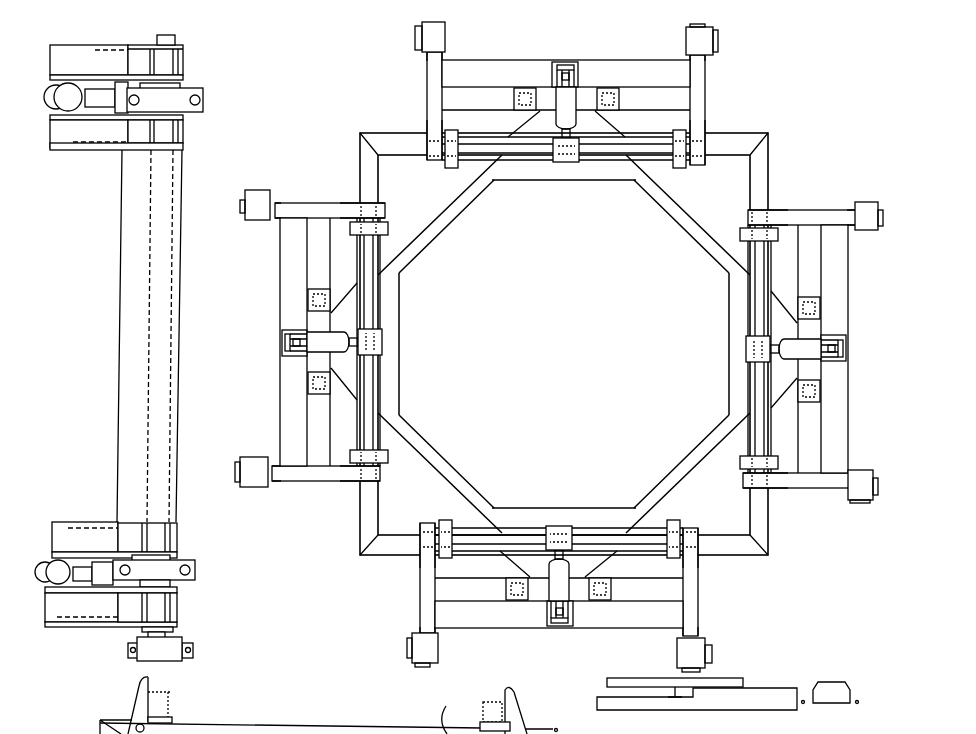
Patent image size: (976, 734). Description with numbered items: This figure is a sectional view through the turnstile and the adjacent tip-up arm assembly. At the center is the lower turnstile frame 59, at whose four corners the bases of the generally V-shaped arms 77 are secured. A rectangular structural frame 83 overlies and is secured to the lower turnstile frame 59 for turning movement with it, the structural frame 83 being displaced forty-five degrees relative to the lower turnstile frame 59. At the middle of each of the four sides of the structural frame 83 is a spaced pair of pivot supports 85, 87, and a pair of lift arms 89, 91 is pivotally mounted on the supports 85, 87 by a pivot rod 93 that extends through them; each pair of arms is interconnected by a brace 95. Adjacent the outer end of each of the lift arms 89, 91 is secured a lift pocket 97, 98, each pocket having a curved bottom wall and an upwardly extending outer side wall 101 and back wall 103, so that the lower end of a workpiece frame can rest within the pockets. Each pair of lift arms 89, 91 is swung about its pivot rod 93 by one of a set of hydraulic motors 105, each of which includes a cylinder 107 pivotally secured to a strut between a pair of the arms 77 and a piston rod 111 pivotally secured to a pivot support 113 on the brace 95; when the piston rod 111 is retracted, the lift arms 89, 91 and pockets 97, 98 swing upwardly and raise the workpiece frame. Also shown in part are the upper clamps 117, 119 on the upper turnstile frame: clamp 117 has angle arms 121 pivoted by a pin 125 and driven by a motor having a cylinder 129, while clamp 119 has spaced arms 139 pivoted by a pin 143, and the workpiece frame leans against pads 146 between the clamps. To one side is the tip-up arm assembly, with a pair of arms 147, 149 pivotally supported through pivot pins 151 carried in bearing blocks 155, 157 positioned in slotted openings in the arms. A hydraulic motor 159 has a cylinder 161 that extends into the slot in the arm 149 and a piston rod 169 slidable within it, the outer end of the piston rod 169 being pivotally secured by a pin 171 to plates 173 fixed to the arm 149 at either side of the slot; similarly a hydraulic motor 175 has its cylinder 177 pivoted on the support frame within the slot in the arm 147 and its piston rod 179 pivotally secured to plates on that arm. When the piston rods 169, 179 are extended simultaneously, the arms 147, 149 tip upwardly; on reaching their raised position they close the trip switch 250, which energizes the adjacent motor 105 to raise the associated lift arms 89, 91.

The lower turnstile frame 59 is at (445, 207).
The V-shaped arms 77 is at (622, 88).
The structural frame 83 is at (420, 131).
The pivot support 85 is at (685, 133).
The pivot support 87 is at (468, 137).
The lift arm 89 is at (705, 100).
The lift arm 91 is at (442, 95).
The pivot rod 93 is at (543, 160).
The brace 95 is at (503, 60).
The lift pocket 97 is at (708, 26).
The lift pocket 98 is at (440, 38).
The outer side wall 101 is at (416, 30).
The back wall 103 is at (428, 63).
The hydraulic motor 105 is at (585, 122).
The cylinder 107 is at (571, 100).
The piston rod 111 is at (562, 64).
The pivot support 113 is at (553, 72).
The upper clamp 117 is at (497, 702).
The upper clamp 119 is at (176, 726).
The angle arm 121 is at (525, 710).
The pin 125 is at (557, 731).
The cylinder 129 is at (441, 710).
The clamp arm 139 is at (150, 680).
The pin 143 is at (171, 692).
The pads 146 is at (175, 725).
The tip-up arm 147 is at (120, 190).
The tip-up arm 149 is at (100, 505).
The pivot pin 151 is at (175, 38).
The bearing block 155 is at (204, 100).
The bearing block 157 is at (196, 572).
The hydraulic motor 159 is at (72, 560).
The cylinder 161 is at (44, 622).
The piston rod 169 is at (68, 595).
The pin 171 is at (168, 558).
The plate 173 is at (170, 588).
The hydraulic motor 175 is at (66, 72).
The cylinder 177 is at (113, 150).
The piston rod 179 is at (80, 95).
The trip switch 250 is at (182, 650).